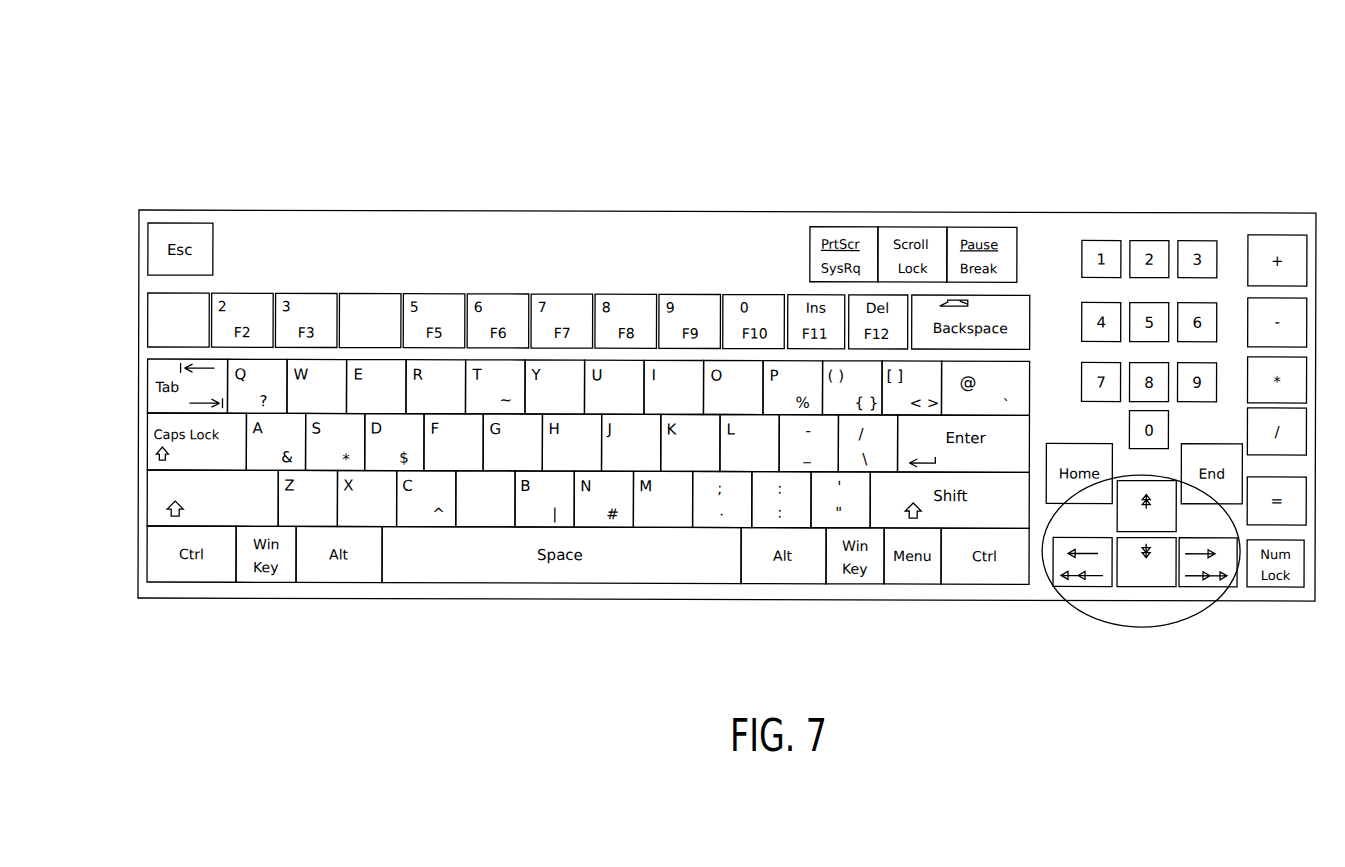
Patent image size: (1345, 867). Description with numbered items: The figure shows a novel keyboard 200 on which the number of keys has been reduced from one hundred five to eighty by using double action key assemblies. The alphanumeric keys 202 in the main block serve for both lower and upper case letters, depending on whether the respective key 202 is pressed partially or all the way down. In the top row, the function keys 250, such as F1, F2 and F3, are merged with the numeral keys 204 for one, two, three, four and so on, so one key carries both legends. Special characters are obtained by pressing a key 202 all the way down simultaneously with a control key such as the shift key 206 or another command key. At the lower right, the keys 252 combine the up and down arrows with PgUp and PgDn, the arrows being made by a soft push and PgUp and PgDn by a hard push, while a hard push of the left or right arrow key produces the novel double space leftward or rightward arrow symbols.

The keyboard 200 is at (208, 85).
The function keys 250 is at (201, 307).
The numeral keys 204 is at (378, 307).
The shift key 206 is at (229, 512).
The key 202 is at (487, 508).
The keys 252 is at (1130, 624).